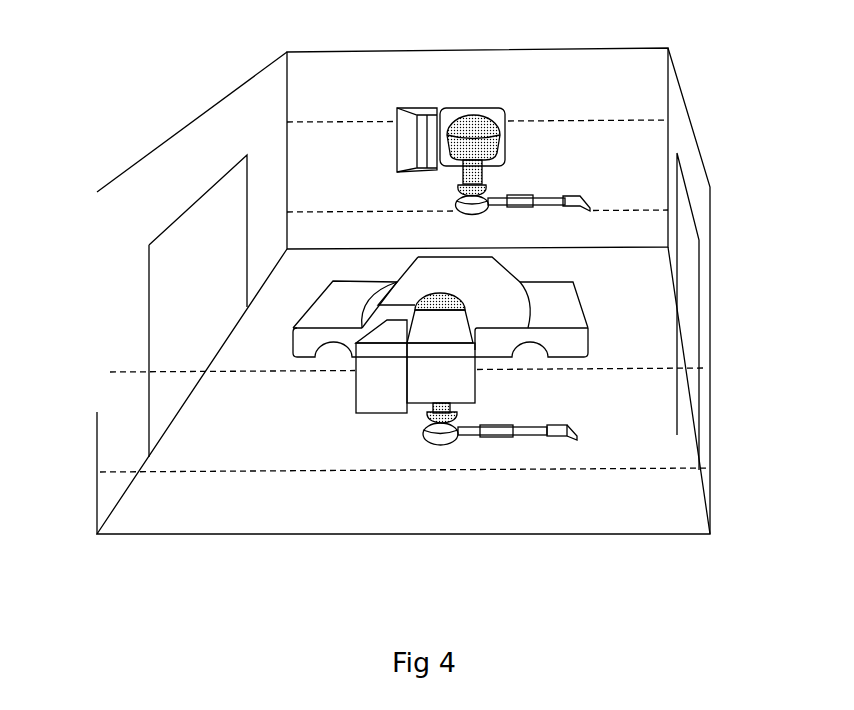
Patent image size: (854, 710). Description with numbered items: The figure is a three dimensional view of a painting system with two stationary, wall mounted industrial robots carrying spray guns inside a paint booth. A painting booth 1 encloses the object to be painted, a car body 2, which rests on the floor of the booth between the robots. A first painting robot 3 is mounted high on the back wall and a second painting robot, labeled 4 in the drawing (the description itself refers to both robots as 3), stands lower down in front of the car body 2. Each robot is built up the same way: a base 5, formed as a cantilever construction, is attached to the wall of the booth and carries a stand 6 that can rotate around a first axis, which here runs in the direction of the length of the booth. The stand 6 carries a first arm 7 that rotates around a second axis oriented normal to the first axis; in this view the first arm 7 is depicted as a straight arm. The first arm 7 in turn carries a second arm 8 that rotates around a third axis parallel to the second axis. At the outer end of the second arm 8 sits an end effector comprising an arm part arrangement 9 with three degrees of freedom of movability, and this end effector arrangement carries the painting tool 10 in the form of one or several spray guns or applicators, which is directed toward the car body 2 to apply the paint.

The painting booth 1 is at (173, 503).
The car body 2 is at (345, 293).
The painting robot 3 is at (433, 92).
The carrier 4 is at (343, 378).
The base 5 is at (397, 108).
The stand 6 is at (468, 100).
The first arm 7 is at (483, 165).
The second arm 8 is at (518, 192).
The arm part arrangement 9 is at (555, 437).
The painting tool 10 is at (575, 440).